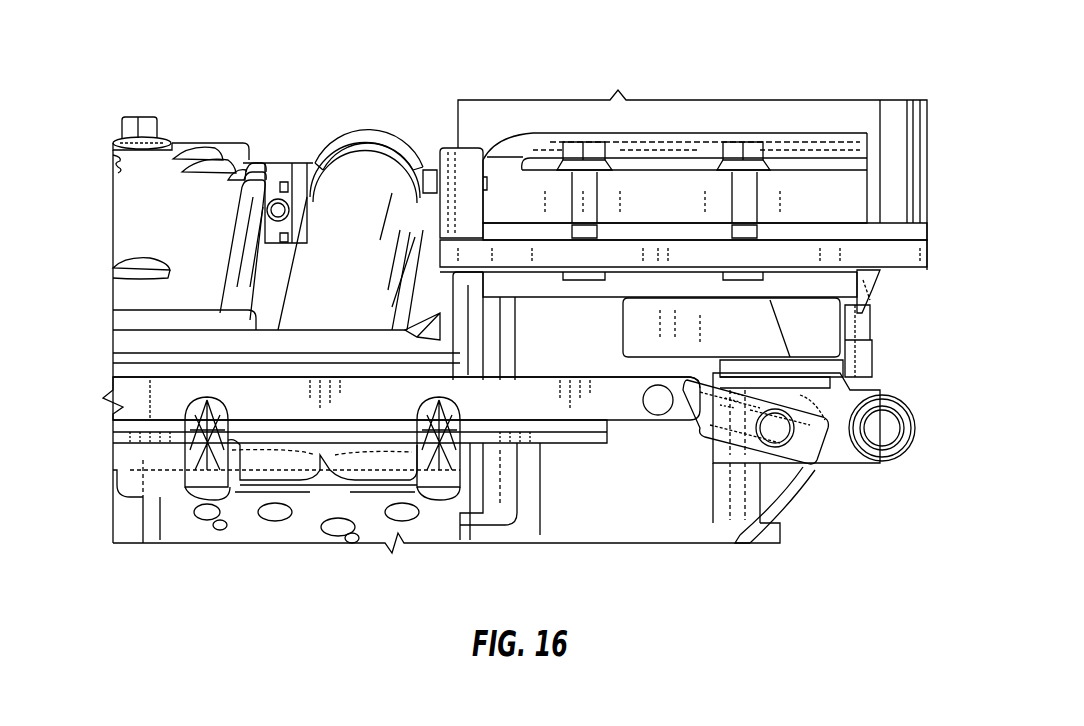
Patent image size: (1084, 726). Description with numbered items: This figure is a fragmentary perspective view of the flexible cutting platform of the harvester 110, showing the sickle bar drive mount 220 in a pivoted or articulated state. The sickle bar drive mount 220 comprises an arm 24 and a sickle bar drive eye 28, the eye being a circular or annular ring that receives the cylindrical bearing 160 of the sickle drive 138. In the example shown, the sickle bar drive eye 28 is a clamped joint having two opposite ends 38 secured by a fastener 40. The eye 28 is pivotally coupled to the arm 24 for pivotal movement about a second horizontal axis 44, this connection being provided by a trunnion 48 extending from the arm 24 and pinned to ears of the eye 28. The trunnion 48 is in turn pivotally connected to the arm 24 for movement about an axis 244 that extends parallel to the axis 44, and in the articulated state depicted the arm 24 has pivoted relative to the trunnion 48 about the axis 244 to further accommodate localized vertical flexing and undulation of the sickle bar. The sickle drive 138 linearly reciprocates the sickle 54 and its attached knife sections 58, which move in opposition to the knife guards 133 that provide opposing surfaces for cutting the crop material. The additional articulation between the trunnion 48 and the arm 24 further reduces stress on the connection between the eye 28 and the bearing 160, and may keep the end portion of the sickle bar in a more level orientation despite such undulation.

The harvester 110 is at (683, 235).
The sickle bar drive mount 220 is at (190, 386).
The sickle drive 138 is at (863, 286).
The cylindrical bearing 160 is at (823, 388).
The arm 24 is at (544, 388).
The axis 244 is at (658, 416).
The trunnion 48 is at (703, 418).
The sickle bar drive eye 28 is at (776, 447).
The second horizontal axis 44 is at (790, 476).
The fastener 40 is at (884, 422).
The opposite ends 38 is at (910, 458).
The knife sections 58 is at (556, 433).
The sickle 54 is at (537, 445).
The knife guards 133 is at (184, 460).